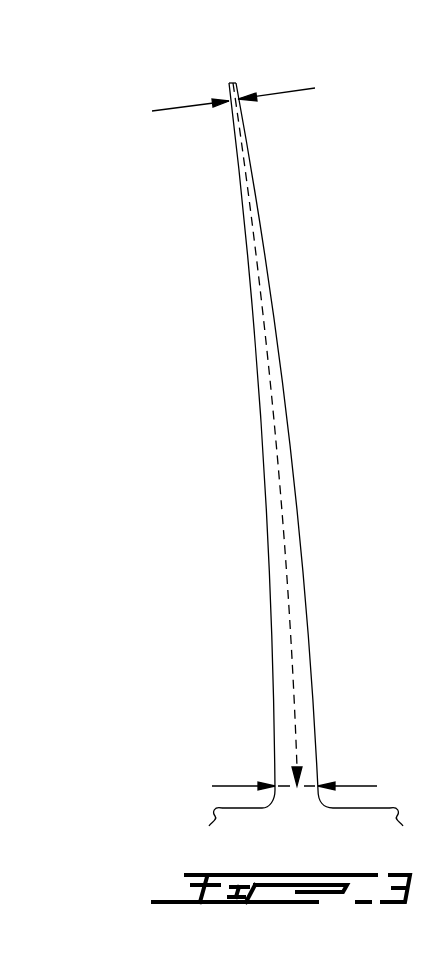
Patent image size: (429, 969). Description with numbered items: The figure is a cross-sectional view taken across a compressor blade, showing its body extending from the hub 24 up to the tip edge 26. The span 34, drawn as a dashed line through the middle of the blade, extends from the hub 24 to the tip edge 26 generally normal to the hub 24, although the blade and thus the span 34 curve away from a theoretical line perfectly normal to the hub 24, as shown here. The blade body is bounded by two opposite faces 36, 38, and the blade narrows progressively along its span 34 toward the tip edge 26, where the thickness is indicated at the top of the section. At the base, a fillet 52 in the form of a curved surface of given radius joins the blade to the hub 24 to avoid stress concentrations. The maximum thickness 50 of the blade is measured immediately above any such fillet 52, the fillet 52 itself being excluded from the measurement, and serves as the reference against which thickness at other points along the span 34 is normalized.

The hub 24 is at (347, 818).
The tip edge 26 is at (236, 83).
The span 34 is at (280, 494).
The face 36 is at (268, 563).
The face 38 is at (305, 600).
The maximum thickness 50 is at (229, 785).
The fillet 52 is at (327, 800).